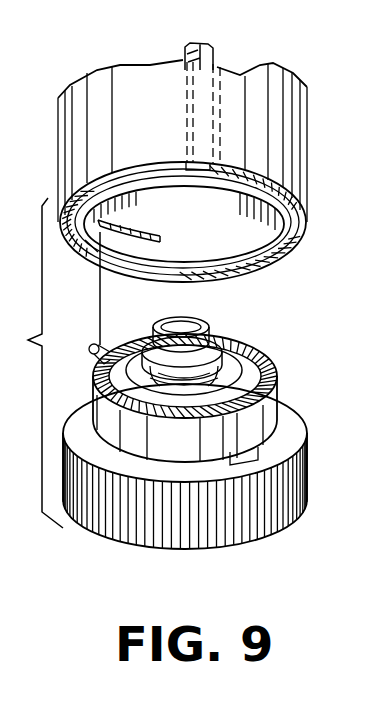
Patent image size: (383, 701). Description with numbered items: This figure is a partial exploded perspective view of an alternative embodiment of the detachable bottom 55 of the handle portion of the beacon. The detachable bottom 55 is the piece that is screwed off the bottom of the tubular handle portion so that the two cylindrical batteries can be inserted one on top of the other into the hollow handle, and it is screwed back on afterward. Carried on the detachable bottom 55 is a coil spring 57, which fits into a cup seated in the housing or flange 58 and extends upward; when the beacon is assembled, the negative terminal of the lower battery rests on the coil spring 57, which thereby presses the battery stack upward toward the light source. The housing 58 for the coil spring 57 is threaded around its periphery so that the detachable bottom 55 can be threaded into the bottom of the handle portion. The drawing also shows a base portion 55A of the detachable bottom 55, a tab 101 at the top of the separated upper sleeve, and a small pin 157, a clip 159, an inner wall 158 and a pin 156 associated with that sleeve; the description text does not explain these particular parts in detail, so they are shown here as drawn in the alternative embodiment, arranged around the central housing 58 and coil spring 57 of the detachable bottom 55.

The tab 101 is at (212, 50).
The pin 157 is at (98, 258).
The inner wall of cap 158 is at (152, 212).
The clip 159 is at (162, 239).
The pin 156 is at (97, 340).
The coil spring 57 is at (200, 317).
The housing 58 is at (280, 393).
The detachable bottom 55 is at (194, 491).
The base bottom 55A is at (262, 535).